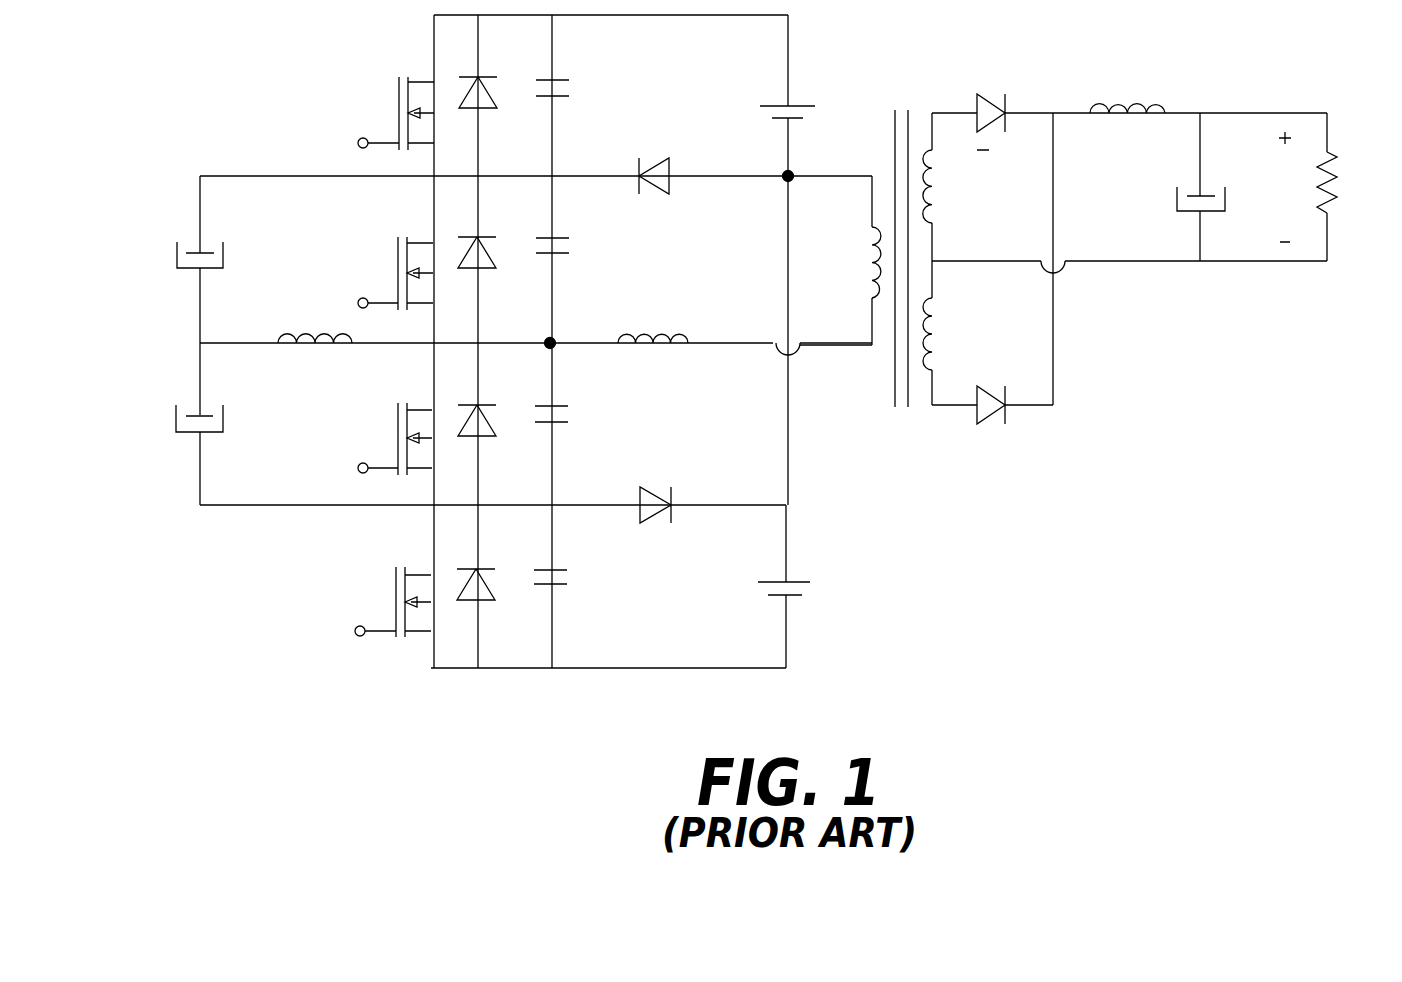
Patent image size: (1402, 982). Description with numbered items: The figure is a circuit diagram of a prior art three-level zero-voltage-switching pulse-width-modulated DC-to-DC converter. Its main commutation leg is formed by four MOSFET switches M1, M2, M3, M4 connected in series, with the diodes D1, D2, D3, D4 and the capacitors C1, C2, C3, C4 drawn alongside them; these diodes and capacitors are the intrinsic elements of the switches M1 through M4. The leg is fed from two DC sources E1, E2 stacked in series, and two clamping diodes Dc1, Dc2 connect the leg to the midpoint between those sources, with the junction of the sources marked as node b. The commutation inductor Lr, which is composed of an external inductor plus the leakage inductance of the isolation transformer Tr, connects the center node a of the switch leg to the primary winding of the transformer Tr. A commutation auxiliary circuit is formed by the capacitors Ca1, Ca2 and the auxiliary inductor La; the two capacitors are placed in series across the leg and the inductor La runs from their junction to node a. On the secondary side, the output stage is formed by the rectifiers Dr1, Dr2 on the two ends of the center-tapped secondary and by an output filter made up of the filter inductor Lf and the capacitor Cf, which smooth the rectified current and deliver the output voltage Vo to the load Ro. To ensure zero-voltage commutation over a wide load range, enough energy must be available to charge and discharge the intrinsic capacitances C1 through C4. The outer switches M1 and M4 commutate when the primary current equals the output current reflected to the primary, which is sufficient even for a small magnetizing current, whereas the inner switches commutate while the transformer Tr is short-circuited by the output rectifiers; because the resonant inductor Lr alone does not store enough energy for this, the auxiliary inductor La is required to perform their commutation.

The MOSFET switch M1 is at (388, 113).
The MOSFET switch M2 is at (387, 273).
The MOSFET switch M3 is at (387, 439).
The MOSFET switch M4 is at (384, 602).
The diode D1 is at (493, 74).
The diode D2 is at (492, 235).
The diode D3 is at (492, 401).
The diode D4 is at (491, 565).
The capacitor C1 is at (568, 68).
The capacitor C2 is at (567, 227).
The capacitor C3 is at (566, 394).
The capacitor C4 is at (564, 557).
The clamping diode Dc1 is at (659, 155).
The clamping diode Dc2 is at (655, 485).
The first DC voltage source E1 is at (797, 92).
The second DC voltage source E2 is at (795, 568).
The capacitor Ca1 is at (162, 258).
The capacitor Ca2 is at (162, 422).
The auxiliary inductor La is at (315, 320).
The commutation inductor Lr is at (653, 319).
The node a is at (561, 328).
The node b is at (799, 193).
The isolation transformer Tr is at (902, 235).
The rectifier Dr1 is at (995, 100).
The rectifier Dr2 is at (995, 385).
The filter inductor Lf is at (1127, 90).
The output filter capacitor Cf is at (1180, 187).
The load Ro is at (1350, 182).
The output voltage Vo is at (1285, 187).